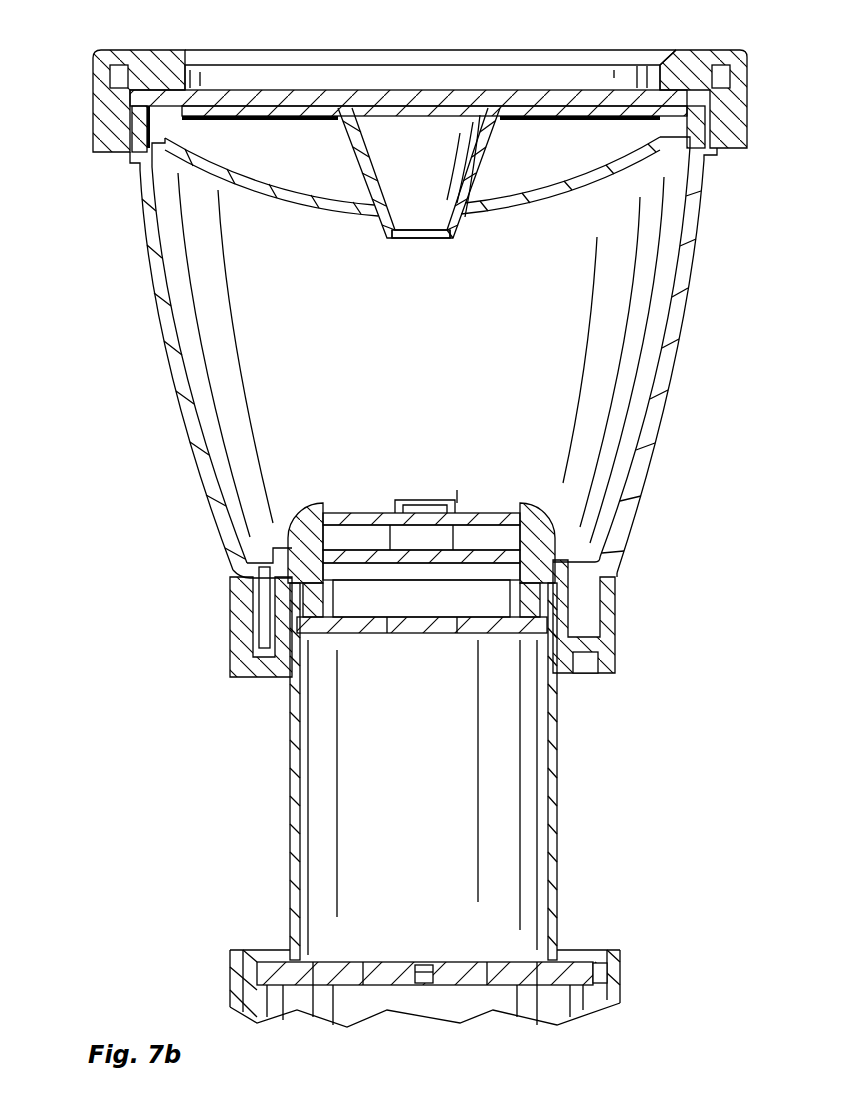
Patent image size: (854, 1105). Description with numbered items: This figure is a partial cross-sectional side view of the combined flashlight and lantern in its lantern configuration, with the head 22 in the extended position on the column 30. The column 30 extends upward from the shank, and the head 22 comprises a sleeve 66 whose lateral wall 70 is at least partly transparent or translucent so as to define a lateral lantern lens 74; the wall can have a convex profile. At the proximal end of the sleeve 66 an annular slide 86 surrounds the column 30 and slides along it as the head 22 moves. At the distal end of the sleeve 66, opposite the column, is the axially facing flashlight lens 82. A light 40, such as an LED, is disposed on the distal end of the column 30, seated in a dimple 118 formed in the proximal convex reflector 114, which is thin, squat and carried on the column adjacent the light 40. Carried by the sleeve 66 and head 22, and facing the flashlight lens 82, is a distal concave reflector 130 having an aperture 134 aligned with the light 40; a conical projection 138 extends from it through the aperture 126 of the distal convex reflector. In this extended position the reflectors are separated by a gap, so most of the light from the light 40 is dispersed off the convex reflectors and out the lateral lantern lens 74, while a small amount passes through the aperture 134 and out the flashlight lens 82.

The head 22 is at (92, 88).
The flashlight lens 82 is at (569, 98).
The aperture 126 is at (355, 228).
The distal concave reflector 130 is at (490, 168).
The conical projection 138 is at (456, 232).
The aperture 134 is at (438, 240).
The sleeve 66 is at (160, 247).
The lateral wall 70 is at (177, 362).
The lateral lantern lens 74 is at (197, 473).
The proximal convex reflector 114 is at (323, 505).
The light 40 is at (431, 500).
The dimple 118 is at (457, 490).
The annular slide 86 is at (617, 620).
The column 30 is at (292, 777).